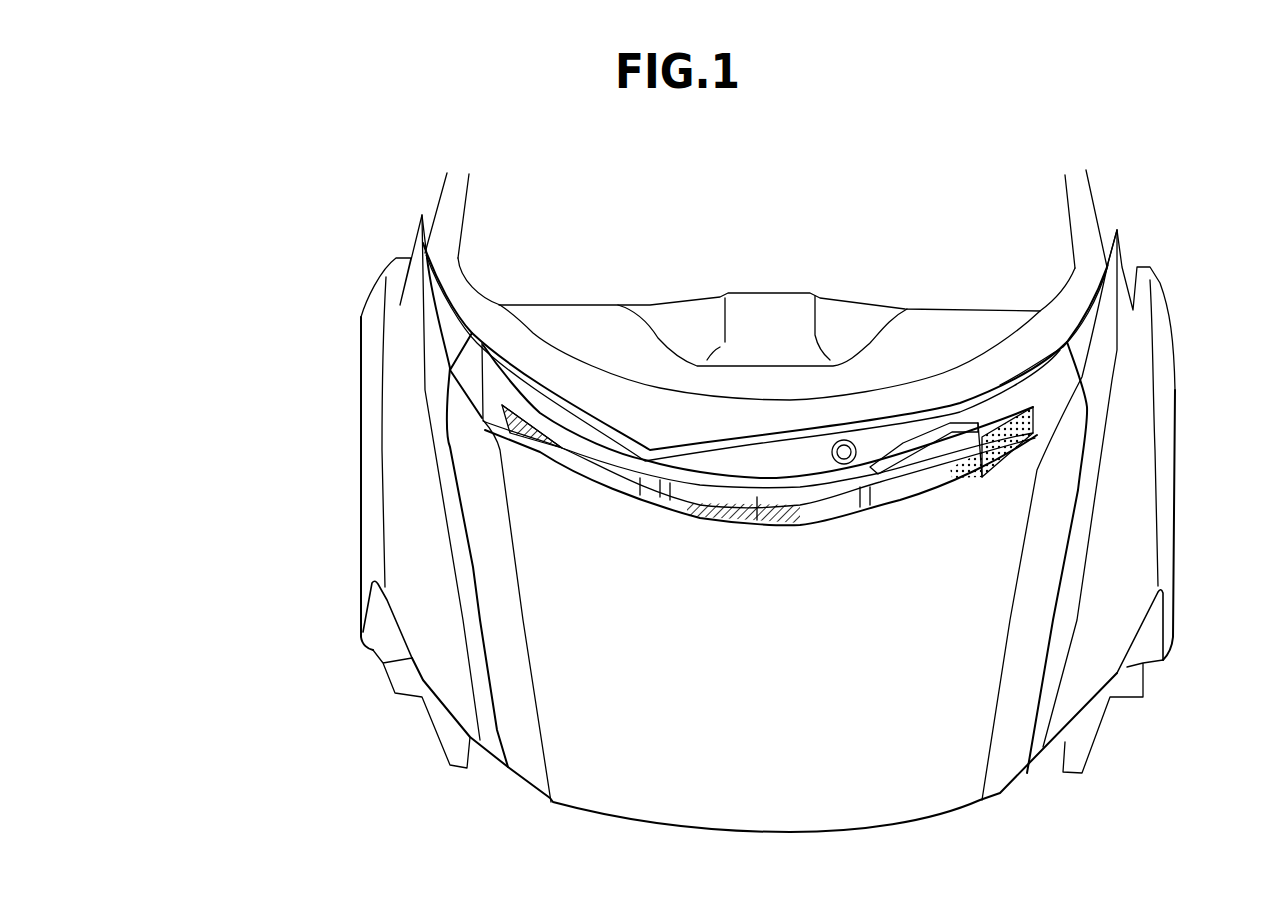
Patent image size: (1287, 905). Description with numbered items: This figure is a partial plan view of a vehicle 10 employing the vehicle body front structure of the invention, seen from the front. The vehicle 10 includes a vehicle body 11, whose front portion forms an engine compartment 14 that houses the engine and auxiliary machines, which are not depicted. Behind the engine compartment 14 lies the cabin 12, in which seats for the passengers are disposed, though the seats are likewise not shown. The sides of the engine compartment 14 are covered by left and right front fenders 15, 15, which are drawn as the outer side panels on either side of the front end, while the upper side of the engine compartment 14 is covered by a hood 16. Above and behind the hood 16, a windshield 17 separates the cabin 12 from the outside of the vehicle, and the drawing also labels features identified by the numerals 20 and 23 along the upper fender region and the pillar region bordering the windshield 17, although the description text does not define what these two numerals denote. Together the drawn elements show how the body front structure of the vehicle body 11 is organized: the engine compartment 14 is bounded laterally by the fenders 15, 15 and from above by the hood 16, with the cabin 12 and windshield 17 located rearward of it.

The vehicle 10 is at (188, 126).
The vehicle body 11 is at (333, 450).
The cabin 12 is at (992, 180).
The engine compartment 14 is at (998, 541).
The front fender 15 is at (401, 567).
The hood 16 is at (1042, 560).
The windshield 17 is at (1027, 190).
The fender upper portion 20 is at (322, 300).
The front pillar 23 is at (435, 212).